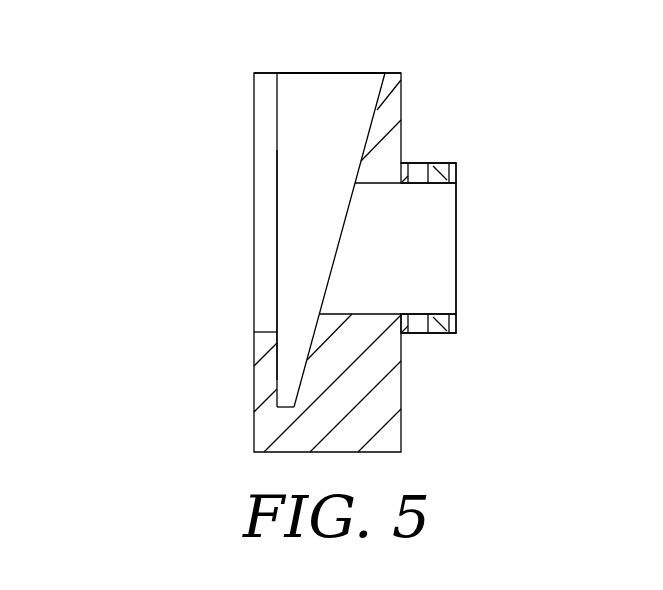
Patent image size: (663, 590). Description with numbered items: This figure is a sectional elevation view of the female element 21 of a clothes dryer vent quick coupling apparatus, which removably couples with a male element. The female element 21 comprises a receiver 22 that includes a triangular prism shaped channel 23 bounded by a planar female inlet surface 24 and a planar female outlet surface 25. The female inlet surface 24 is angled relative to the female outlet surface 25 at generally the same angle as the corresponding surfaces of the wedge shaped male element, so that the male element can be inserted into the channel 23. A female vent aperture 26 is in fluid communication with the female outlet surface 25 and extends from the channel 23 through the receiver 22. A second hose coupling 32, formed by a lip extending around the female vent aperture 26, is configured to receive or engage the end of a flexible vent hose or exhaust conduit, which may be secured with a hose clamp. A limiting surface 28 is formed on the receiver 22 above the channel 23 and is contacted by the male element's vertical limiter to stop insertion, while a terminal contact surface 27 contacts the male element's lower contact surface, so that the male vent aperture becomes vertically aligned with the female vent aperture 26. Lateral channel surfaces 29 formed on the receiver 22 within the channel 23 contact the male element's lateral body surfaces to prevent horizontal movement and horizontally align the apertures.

The female element 21 is at (121, 79).
The receiver 22 is at (387, 128).
The channel 23 is at (305, 239).
The female inlet surface 24 is at (281, 163).
The female outlet surface 25 is at (362, 146).
The female vent aperture 26 is at (427, 242).
The terminal contact surface 27 is at (285, 400).
The limiting surface 28 is at (285, 71).
The lateral channel surface 29 is at (315, 88).
The second hose coupling 32 is at (439, 167).